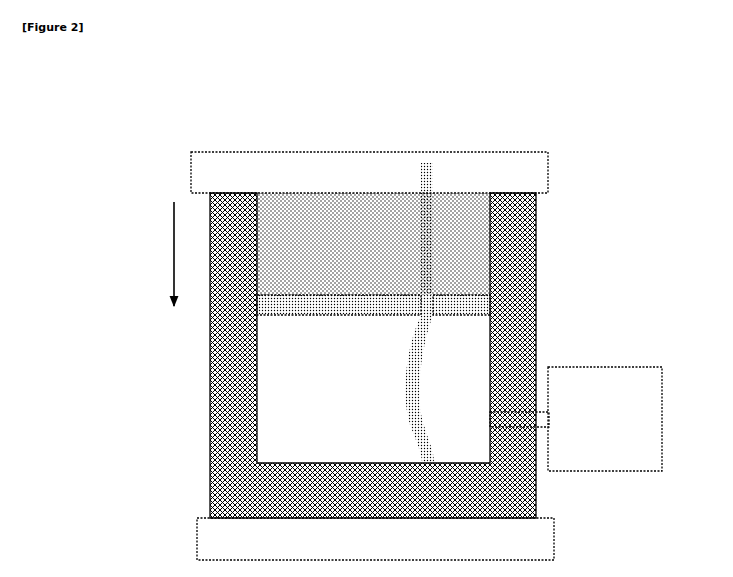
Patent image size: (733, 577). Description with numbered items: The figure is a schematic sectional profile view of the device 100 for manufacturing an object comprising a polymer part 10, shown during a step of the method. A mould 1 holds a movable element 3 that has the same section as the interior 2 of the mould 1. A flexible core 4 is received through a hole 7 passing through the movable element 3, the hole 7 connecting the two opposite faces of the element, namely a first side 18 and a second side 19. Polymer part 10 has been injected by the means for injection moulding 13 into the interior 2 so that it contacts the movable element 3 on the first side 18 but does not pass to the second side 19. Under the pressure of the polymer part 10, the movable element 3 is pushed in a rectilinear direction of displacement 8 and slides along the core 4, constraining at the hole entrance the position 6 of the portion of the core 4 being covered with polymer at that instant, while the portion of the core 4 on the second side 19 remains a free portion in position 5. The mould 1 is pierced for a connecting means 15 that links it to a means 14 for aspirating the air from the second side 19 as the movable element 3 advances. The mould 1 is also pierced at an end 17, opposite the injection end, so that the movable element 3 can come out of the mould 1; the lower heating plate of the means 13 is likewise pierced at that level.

The device 100 is at (165, 360).
The mould 1 is at (538, 232).
The interior of the mould 2 is at (249, 345).
The movable element 3 is at (395, 307).
The core 4 is at (460, 209).
The position of the free portion of the core 5 is at (429, 353).
The position of the portion of the core being covered with polymer 6 is at (438, 282).
The hole 7 is at (426, 286).
The direction of displacement 8 is at (172, 252).
The polymer part 10 is at (435, 193).
The means for injection moulding 13 is at (188, 172).
The means for aspirating 14 is at (614, 365).
The connecting means 15 is at (539, 410).
The end of the mould 17 is at (372, 520).
The first side 18 is at (350, 191).
The second side 19 is at (338, 319).